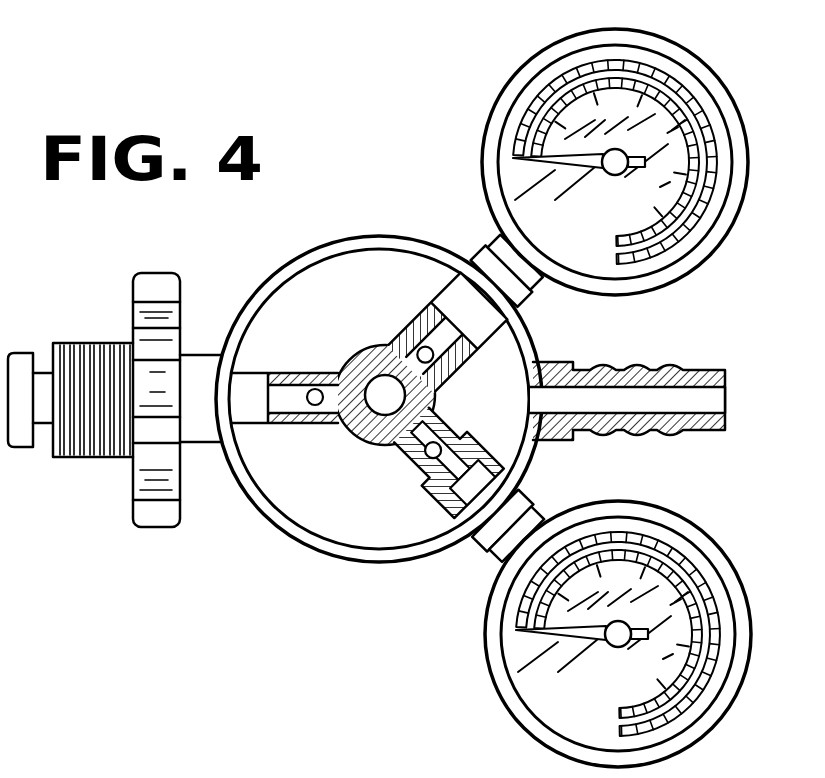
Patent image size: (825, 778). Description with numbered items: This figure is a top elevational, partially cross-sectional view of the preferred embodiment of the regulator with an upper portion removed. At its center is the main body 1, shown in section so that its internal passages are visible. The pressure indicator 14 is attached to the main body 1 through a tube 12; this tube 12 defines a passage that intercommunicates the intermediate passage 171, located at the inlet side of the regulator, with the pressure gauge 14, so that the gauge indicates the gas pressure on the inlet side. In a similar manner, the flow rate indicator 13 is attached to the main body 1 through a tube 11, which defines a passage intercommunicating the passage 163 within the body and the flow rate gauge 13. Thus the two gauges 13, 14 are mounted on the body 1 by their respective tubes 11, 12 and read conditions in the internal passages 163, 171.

The main body 1 is at (366, 384).
The tube 11 is at (494, 262).
The tube 12 is at (495, 540).
The flow rate indicator 13 is at (736, 97).
The pressure indicator 14 is at (752, 633).
The passage 163 is at (435, 308).
The intermediate passage 171 is at (426, 456).